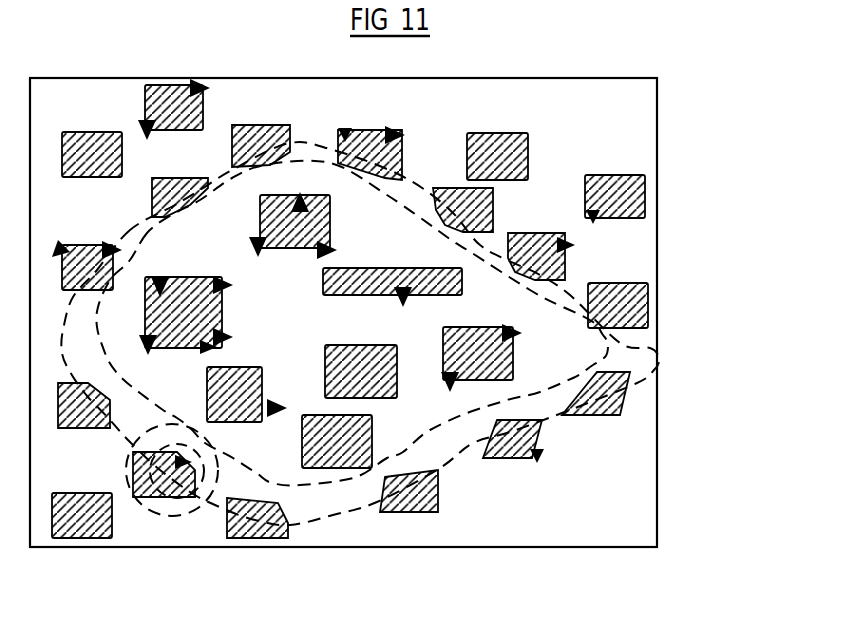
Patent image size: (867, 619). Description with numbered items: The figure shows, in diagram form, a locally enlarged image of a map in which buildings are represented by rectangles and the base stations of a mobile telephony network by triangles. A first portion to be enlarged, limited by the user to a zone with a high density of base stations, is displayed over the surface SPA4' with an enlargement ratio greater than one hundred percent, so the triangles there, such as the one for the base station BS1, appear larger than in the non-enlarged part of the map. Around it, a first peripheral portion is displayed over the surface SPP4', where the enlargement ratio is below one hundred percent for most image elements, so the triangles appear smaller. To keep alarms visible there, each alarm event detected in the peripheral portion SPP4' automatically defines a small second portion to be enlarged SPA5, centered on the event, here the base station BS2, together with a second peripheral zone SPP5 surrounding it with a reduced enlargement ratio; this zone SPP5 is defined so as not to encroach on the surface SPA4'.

The surface displaying the first peripheral portion SPP4' is at (403, 333).
The surface displaying the first portion to be enlarged SPA4' is at (425, 323).
The second peripheral zone SPP5 is at (153, 495).
The second portion to be enlarged SPA5 is at (183, 500).
The base station BS1 is at (467, 402).
The base station BS2 is at (203, 472).